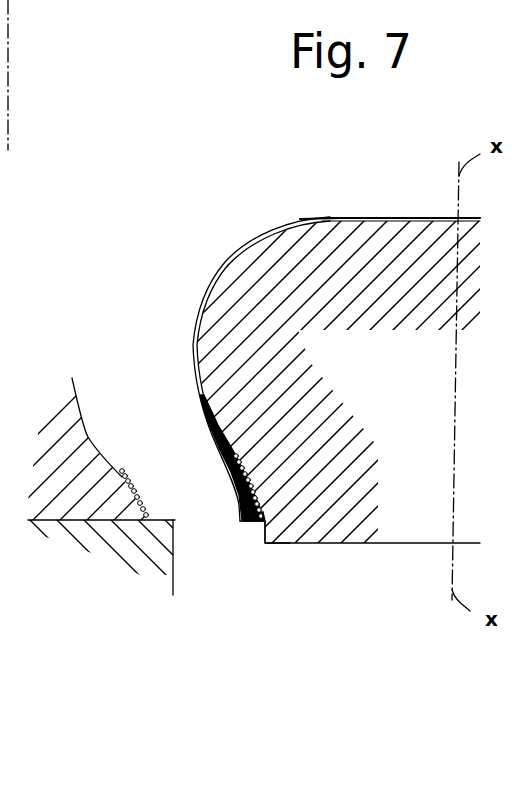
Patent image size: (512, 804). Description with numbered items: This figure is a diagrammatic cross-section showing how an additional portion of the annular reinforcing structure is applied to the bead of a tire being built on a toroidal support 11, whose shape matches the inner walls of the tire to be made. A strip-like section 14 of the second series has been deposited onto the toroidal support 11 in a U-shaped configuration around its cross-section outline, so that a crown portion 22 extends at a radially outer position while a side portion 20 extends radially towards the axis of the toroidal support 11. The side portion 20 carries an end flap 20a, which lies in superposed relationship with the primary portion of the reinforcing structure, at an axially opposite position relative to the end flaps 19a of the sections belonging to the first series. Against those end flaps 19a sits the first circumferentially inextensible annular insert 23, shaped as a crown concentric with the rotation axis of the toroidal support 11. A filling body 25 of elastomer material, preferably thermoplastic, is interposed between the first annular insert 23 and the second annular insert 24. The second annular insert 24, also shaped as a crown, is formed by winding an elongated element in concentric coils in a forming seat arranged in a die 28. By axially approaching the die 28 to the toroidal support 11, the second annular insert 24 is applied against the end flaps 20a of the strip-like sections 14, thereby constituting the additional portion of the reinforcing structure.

The toroidal support 11 is at (389, 228).
The strip-like section 14 is at (320, 210).
The crown portion 22 is at (426, 216).
The side portion 20 is at (206, 300).
The end flap 20a is at (237, 506).
The filling body 25 is at (233, 463).
The first annular insert 23 is at (256, 532).
The end flap 19a is at (265, 524).
The die 28 is at (88, 438).
The second annular insert 24 is at (132, 458).